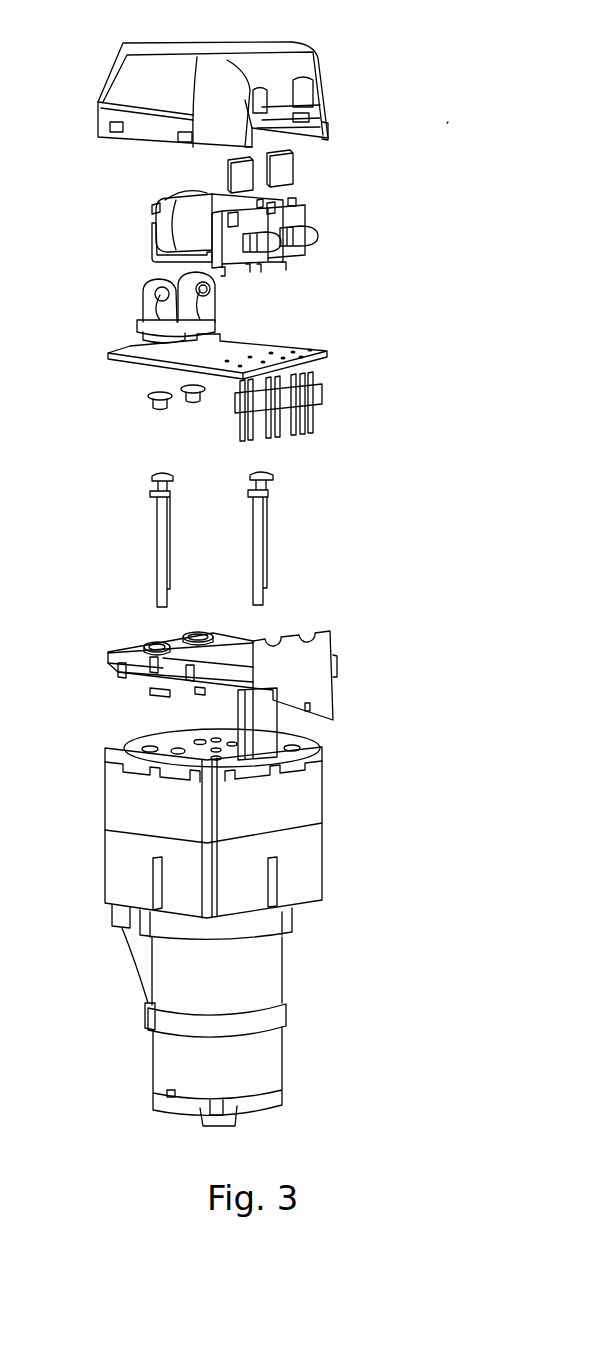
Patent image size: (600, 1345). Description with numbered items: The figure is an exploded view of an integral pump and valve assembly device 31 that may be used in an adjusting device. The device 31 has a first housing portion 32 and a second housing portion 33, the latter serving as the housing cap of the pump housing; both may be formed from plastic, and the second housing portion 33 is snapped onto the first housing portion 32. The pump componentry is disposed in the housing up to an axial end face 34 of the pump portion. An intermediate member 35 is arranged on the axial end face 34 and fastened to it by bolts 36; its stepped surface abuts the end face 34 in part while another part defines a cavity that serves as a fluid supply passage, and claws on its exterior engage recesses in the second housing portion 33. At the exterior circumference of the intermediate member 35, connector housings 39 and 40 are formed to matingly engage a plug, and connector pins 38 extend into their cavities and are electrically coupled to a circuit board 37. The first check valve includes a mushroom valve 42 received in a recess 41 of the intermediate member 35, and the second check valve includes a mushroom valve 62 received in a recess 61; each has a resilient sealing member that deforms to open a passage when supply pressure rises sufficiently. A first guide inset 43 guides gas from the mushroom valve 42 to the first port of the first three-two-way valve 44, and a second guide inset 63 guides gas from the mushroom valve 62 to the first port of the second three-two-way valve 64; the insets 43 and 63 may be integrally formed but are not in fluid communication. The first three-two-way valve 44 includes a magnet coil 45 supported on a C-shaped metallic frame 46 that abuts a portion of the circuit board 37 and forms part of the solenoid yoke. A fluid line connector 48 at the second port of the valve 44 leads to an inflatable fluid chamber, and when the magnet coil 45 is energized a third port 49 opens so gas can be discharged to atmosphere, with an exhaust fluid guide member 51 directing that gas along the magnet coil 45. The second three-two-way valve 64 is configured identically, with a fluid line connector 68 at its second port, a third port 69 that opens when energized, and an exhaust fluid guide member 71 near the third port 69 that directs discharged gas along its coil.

The integral pump and valve assembly device 31 is at (447, 123).
The first housing portion 32 is at (103, 834).
The second housing portion 33 is at (93, 117).
The axial end face 34 is at (125, 743).
The intermediate member 35 is at (99, 672).
The bolts 36 is at (266, 547).
The circuit board 37 is at (329, 353).
The connector pins 38 is at (320, 406).
The connector housing 39 is at (333, 704).
The connector housing 40 is at (271, 752).
The recess 41 is at (145, 647).
The mushroom valve 42 is at (146, 401).
The first guide inset 43 is at (145, 305).
The first 3/2-way valve 44 is at (152, 207).
The magnet coil 45 is at (171, 218).
The metallic frame 46 is at (173, 260).
The fluid line connector 48 is at (280, 249).
The third port 49 is at (235, 221).
The exhaust fluid guide member 51 is at (225, 165).
The recess 61 is at (217, 633).
The mushroom valve 62 is at (186, 382).
The second guide inset 63 is at (218, 296).
The second 3/2-way valve 64 is at (308, 255).
The fluid line connector 68 is at (318, 238).
The third port 69 is at (297, 204).
The exhaust fluid guide member 71 is at (295, 152).